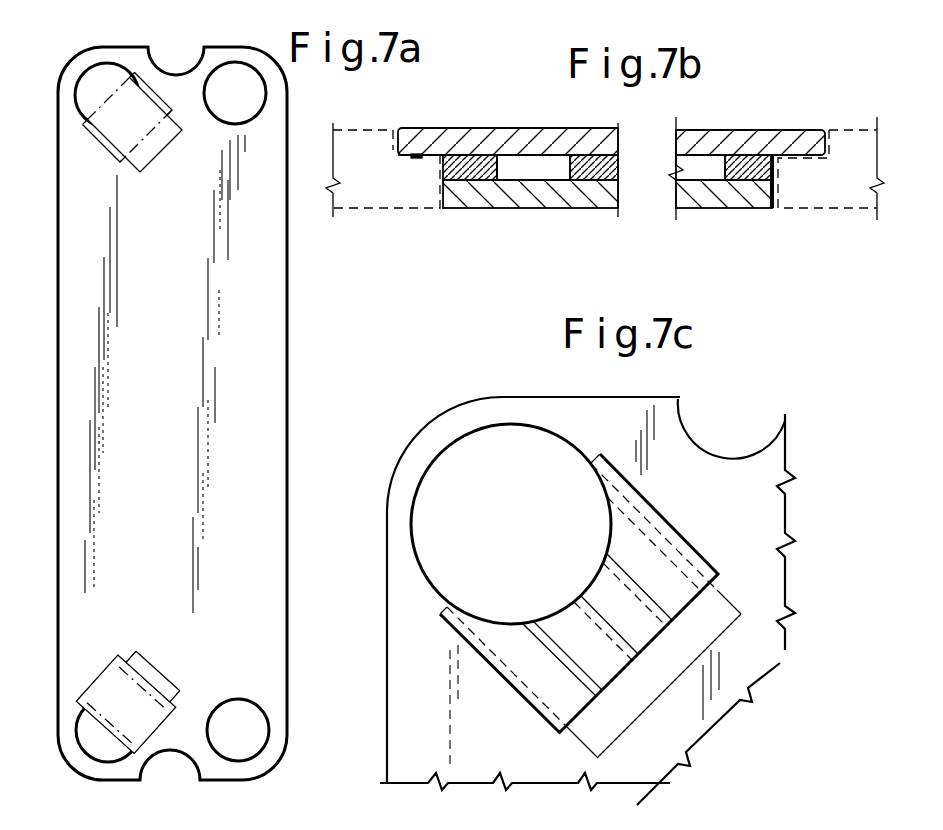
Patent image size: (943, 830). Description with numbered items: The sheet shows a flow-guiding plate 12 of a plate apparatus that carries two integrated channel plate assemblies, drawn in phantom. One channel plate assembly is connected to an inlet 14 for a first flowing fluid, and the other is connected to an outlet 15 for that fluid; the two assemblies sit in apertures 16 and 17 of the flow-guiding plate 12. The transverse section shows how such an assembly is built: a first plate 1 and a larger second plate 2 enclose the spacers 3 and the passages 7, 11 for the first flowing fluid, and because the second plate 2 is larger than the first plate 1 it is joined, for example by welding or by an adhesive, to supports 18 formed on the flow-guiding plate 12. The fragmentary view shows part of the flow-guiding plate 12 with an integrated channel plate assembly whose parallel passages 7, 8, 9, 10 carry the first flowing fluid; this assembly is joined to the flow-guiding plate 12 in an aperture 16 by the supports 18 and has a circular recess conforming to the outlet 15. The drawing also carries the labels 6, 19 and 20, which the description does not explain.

In FIG. 7B, the first plate 1 is at (759, 198).
In FIG. 7B, the second plate 2 is at (462, 140).
In FIG. 7B, the spacers 3 is at (607, 209).
In FIG. 7C, the spacers 3 is at (620, 563).
In FIG. 7B, the gasket seat (elevation) 6 is at (477, 177).
In FIG. 7B, the passage 7 is at (537, 166).
In FIG. 7C, the passage 7 is at (548, 677).
In FIG. 7C, the passage 8 is at (598, 657).
In FIG. 7C, the passage 9 is at (632, 622).
In FIG. 7C, the passage 10 is at (672, 592).
In FIG. 7B, the passage 11 is at (700, 172).
In FIG. 7A, the flow-guiding plate 12 is at (266, 384).
In FIG. 7B, the flow-guiding plate 12 is at (361, 136).
In FIG. 7C, the flow-guiding plate 12 is at (652, 407).
In FIG. 7A, the inlet 14 is at (82, 727).
In FIG. 7A, the outlet 15 is at (97, 73).
In FIG. 7C, the outlet 15 is at (487, 452).
In FIG. 7A, the aperture 16 is at (153, 147).
In FIG. 7C, the aperture 16 is at (708, 632).
In FIG. 7A, the aperture 17 is at (163, 682).
In FIG. 7A, the supports 18 is at (137, 82).
In FIG. 7B, the supports 18 is at (418, 160).
In FIG. 7C, the supports 18 is at (700, 565).
In FIG. 7A, the port opening 19 is at (235, 77).
In FIG. 7A, the port opening 20 is at (253, 740).